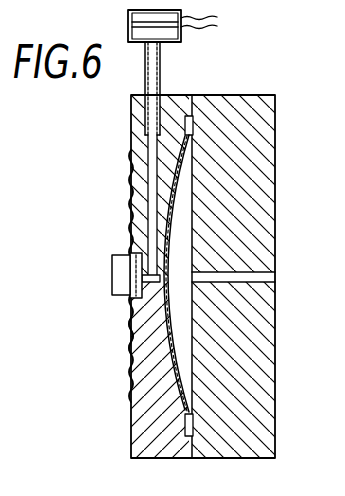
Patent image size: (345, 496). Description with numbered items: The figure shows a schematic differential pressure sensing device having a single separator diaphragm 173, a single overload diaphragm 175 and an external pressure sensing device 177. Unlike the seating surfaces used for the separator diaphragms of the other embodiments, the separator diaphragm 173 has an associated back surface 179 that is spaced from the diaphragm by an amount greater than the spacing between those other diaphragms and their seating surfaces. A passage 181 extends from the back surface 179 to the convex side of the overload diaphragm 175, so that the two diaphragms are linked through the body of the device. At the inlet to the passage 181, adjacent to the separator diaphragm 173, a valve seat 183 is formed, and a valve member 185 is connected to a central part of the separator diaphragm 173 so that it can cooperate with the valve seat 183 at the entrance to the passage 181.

The separator diaphragm 173 is at (132, 346).
The overload diaphragm 175 is at (185, 206).
The external pressure sensing device 177 is at (183, 36).
The back surface 179 is at (125, 181).
The passage 181 is at (128, 334).
The valve seat 183 is at (118, 279).
The valve member 185 is at (130, 283).